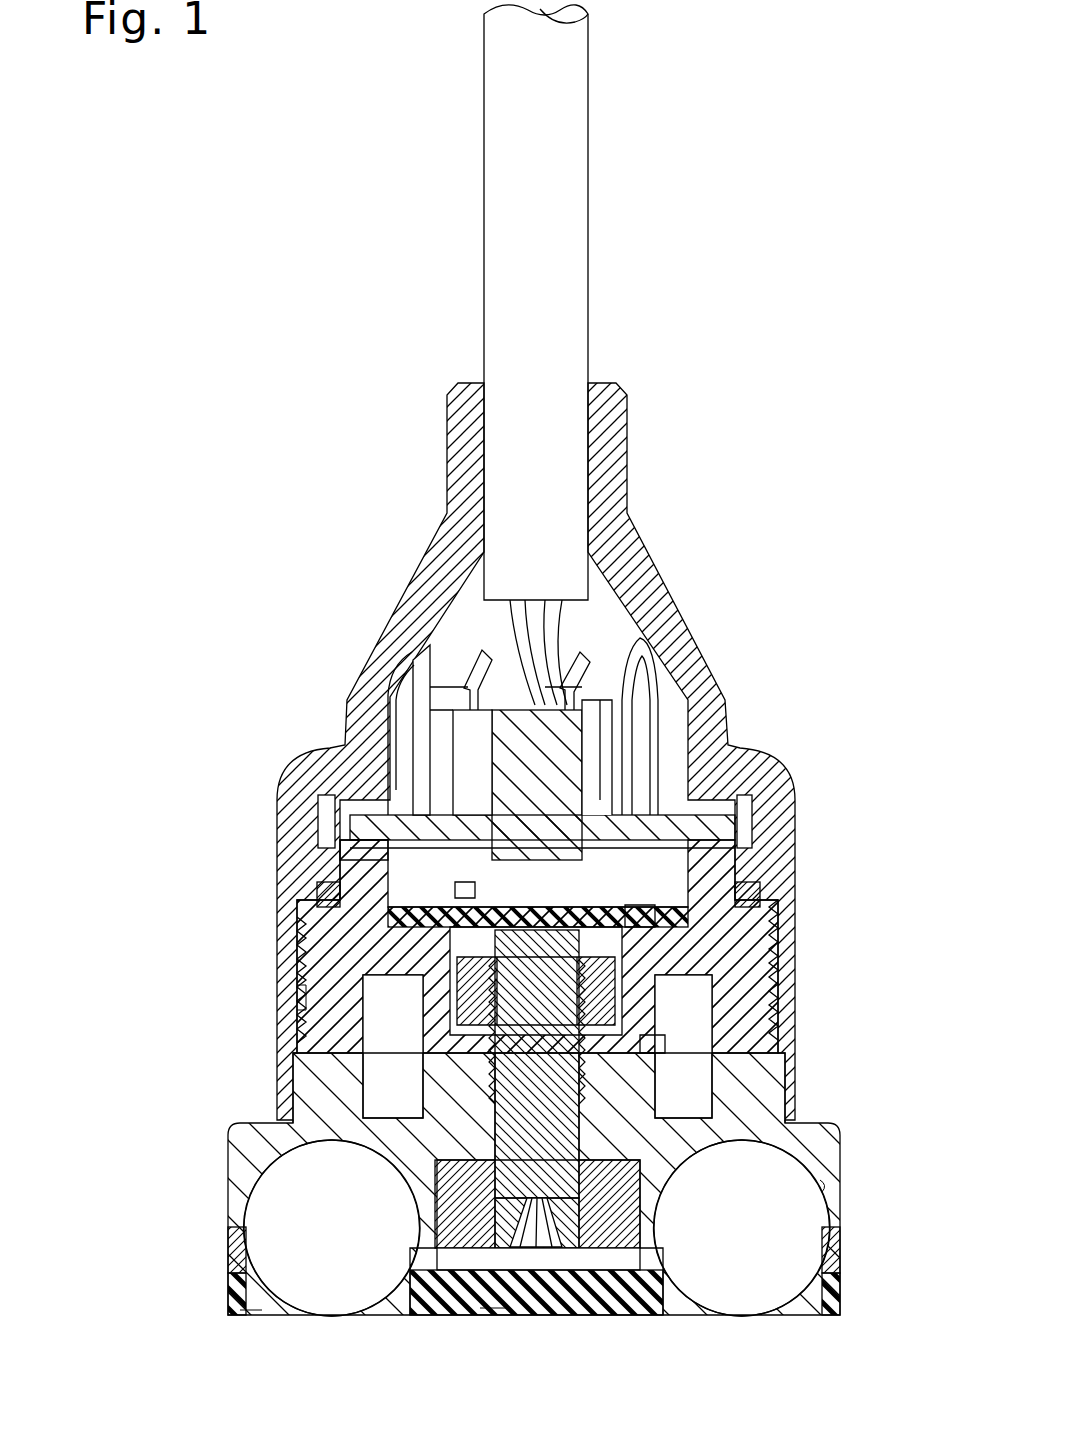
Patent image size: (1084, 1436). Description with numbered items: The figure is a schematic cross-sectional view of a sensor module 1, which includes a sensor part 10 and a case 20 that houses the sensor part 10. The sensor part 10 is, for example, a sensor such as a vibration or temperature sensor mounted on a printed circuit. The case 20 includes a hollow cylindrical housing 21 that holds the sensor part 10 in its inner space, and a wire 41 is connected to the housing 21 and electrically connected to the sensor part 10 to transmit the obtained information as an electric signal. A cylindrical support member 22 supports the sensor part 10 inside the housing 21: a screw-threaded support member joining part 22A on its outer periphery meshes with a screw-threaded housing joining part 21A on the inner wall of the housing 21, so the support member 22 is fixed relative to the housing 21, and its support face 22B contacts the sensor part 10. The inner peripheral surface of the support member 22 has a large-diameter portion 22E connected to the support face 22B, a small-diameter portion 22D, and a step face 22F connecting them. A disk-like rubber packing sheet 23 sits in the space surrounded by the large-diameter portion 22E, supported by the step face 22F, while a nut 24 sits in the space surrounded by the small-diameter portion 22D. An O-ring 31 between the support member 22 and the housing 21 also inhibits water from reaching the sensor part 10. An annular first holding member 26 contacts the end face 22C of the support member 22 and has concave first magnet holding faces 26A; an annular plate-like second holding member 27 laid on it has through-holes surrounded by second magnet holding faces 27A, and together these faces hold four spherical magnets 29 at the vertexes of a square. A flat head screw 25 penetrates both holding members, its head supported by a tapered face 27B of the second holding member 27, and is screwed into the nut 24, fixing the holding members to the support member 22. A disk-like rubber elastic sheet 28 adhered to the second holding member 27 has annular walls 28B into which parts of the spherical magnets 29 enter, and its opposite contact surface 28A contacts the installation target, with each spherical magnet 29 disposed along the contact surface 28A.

The sensor module 1 is at (722, 505).
The wire 41 is at (565, 154).
The case 20 is at (810, 780).
The housing 21 is at (775, 856).
The housing joining part 21A is at (312, 996).
The sensor part 10 is at (545, 742).
The support member 22 is at (718, 942).
The support member joining part 22A is at (770, 1015).
The support face 22B is at (350, 822).
The end face 22C is at (330, 1078).
The small-diameter portion 22D is at (470, 892).
The large-diameter portion 22E is at (658, 1050).
The step face 22F is at (640, 920).
The packing sheet 23 is at (385, 872).
The O-ring 31 is at (758, 896).
The nut 24 is at (618, 988).
The flat head screw 25 is at (578, 1078).
The first holding member 26 is at (750, 1125).
The first magnet holding face 26A is at (804, 1188).
The second holding member 27 is at (400, 1140).
The second magnet holding face 27A is at (262, 1248).
The tapered face 27B is at (600, 1252).
The elastic sheet 28 is at (836, 1292).
The contact surface 28A is at (492, 1312).
The annular wall 28B is at (250, 1312).
The spherical magnet 29 is at (804, 1246).